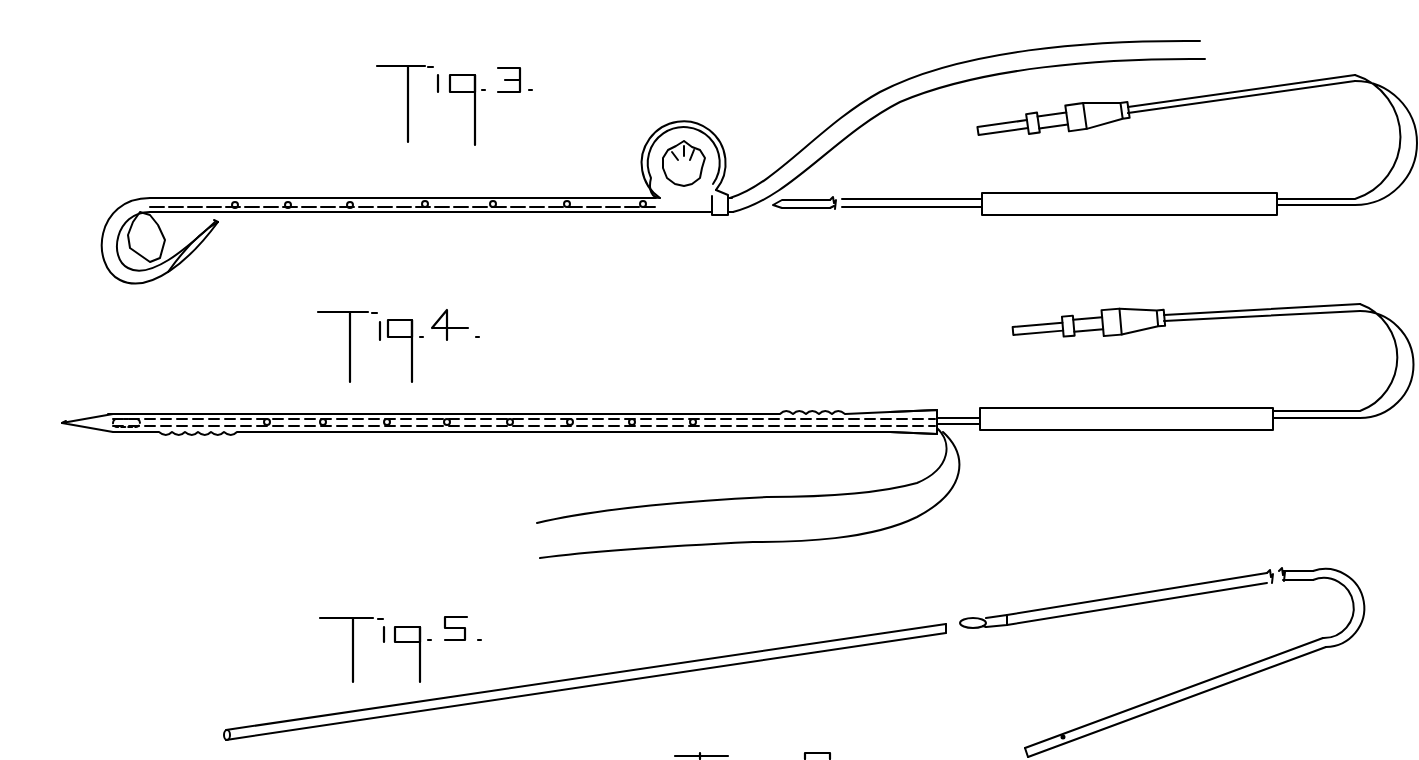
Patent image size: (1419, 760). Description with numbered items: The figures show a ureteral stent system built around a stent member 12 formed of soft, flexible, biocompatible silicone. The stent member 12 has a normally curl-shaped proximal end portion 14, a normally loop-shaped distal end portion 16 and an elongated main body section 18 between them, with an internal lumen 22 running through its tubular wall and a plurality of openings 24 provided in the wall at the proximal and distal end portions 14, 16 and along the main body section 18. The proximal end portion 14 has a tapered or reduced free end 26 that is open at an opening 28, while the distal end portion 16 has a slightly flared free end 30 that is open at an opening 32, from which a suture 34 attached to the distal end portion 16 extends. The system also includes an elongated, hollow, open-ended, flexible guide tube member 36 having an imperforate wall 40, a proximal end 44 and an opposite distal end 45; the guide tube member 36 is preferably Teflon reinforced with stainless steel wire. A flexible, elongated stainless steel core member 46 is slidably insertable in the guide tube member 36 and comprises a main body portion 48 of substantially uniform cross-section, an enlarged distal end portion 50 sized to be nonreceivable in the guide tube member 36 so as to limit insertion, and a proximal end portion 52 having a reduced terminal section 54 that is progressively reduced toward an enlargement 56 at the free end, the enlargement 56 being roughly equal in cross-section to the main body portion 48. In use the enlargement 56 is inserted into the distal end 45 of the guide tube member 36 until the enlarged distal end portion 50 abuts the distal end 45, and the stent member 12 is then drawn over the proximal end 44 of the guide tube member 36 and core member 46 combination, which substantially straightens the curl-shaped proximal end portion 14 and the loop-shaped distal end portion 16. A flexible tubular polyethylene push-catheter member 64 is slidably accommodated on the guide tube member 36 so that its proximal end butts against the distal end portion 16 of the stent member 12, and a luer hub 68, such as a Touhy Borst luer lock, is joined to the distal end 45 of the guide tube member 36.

In FIG. 3, the stent member 12 is at (273, 192).
In FIG. 4, the stent member 12 is at (570, 378).
In FIG. 3, the proximal end portion 14 is at (147, 283).
In FIG. 4, the proximal end portion 14 is at (117, 433).
In FIG. 3, the distal end portion 16 is at (722, 138).
In FIG. 4, the distal end portion 16 is at (855, 432).
In FIG. 3, the main body section 18 is at (484, 197).
In FIG. 4, the main body section 18 is at (603, 416).
In FIG. 4, the lumen 22 is at (722, 426).
In FIG. 3, the openings 24 is at (396, 234).
In FIG. 4, the openings 24 is at (190, 432).
In FIG. 3, the free end 26 is at (210, 237).
In FIG. 4, the free end 26 is at (108, 414).
In FIG. 3, the opening 28 is at (216, 222).
In FIG. 4, the opening 28 is at (64, 422).
In FIG. 3, the free end 30 is at (713, 216).
In FIG. 4, the free end 30 is at (923, 410).
In FIG. 3, the opening 32 is at (729, 210).
In FIG. 4, the opening 32 is at (940, 418).
In FIG. 3, the suture 34 is at (949, 72).
In FIG. 4, the suture 34 is at (757, 496).
In FIG. 3, the guide tube member 36 is at (806, 212).
In FIG. 4, the guide tube member 36 is at (961, 412).
In FIG. 5, the guide tube member 36 is at (573, 675).
In FIG. 3, the imperforate wall 40 is at (924, 206).
In FIG. 4, the imperforate wall 40 is at (1300, 417).
In FIG. 5, the imperforate wall 40 is at (706, 661).
In FIG. 5, the proximal end 44 is at (240, 728).
In FIG. 5, the distal end 45 is at (937, 635).
In FIG. 3, the core member 46 is at (993, 125).
In FIG. 4, the core member 46 is at (1031, 322).
In FIG. 5, the core member 46 is at (1173, 588).
In FIG. 5, the main body portion 48 is at (1260, 663).
In FIG. 3, the enlarged distal end portion 50 is at (1026, 147).
In FIG. 4, the enlarged distal end portion 50 is at (1059, 349).
In FIG. 5, the enlarged distal end portion 50 is at (1048, 730).
In FIG. 5, the proximal end portion 52 is at (990, 627).
In FIG. 5, the terminal section 54 is at (1000, 617).
In FIG. 5, the enlargement 56 is at (968, 618).
In FIG. 3, the push-catheter member 64 is at (1071, 216).
In FIG. 4, the push-catheter member 64 is at (1108, 431).
In FIG. 3, the luer hub 68 is at (1103, 133).
In FIG. 4, the luer hub 68 is at (1136, 343).